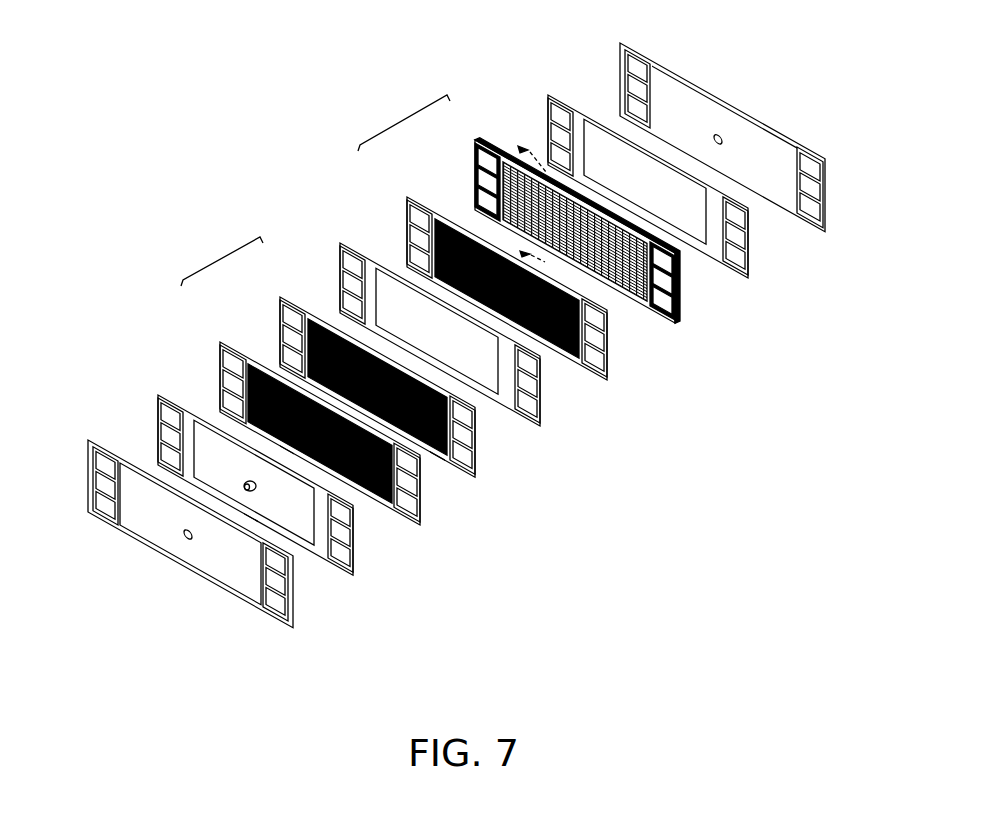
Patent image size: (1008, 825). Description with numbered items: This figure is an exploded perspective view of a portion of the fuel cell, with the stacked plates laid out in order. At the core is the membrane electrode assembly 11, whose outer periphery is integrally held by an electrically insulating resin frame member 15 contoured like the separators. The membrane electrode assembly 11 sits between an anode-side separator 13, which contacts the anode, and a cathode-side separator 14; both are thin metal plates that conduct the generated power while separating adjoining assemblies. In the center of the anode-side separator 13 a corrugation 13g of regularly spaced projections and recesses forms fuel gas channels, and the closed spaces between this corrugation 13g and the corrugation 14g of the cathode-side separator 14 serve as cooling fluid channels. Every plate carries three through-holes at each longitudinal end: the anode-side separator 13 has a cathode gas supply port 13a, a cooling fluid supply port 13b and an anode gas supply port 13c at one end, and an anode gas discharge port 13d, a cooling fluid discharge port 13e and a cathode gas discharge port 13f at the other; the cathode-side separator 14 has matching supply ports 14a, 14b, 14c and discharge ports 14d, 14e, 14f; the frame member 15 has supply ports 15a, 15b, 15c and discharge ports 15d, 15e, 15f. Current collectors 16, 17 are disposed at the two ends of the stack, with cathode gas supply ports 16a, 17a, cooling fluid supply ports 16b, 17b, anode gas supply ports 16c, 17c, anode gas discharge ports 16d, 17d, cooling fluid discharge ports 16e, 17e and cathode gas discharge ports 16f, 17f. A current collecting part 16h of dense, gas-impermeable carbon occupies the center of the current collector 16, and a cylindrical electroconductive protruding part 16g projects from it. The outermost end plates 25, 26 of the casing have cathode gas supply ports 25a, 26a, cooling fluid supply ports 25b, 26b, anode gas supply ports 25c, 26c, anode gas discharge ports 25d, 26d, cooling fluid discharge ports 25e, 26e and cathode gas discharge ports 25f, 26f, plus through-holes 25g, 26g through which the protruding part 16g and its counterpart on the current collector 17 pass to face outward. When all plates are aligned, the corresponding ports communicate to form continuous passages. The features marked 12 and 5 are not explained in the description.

The gas flow direction 5 is at (525, 197).
The membrane electrode assembly 11 is at (389, 276).
The cell unit 12 is at (401, 121).
The anode-side separator 13 is at (390, 393).
The cathode gas supply port 13a is at (222, 360).
The cooling fluid supply port 13b is at (222, 380).
The anode gas supply port 13c is at (222, 400).
The anode gas discharge port 13d is at (421, 465).
The cooling fluid discharge port 13e is at (421, 485).
The cathode gas discharge port 13f is at (421, 505).
The corrugation 13g is at (287, 449).
The cathode-side separator 14 is at (455, 345).
The cathode gas supply port 14a is at (282, 315).
The cooling fluid supply port 14b is at (282, 335).
The anode gas supply port 14c is at (282, 355).
The anode gas discharge port 14d is at (476, 418).
The cooling fluid discharge port 14e is at (476, 438).
The cathode gas discharge port 14f is at (476, 458).
The corrugation 14g is at (438, 457).
The frame member 15 is at (443, 336).
The cathode gas supply port 15a is at (342, 262).
The cooling fluid supply port 15b is at (342, 282).
The anode gas supply port 15c is at (342, 302).
The anode gas discharge port 15d is at (541, 366).
The cooling fluid discharge port 15e is at (541, 386).
The cathode gas discharge port 15f is at (541, 406).
The current collector 16 is at (254, 486).
The cathode gas supply port 16a is at (160, 412).
The cooling fluid supply port 16b is at (160, 432).
The anode gas supply port 16c is at (160, 452).
The anode gas discharge port 16d is at (354, 515).
The cooling fluid discharge port 16e is at (354, 535).
The cathode gas discharge port 16f is at (354, 555).
The protruding part 16g is at (247, 490).
The current collecting part 16h is at (252, 516).
The current collector 17 is at (648, 164).
The cathode gas supply port 17a is at (550, 108).
The cooling fluid supply port 17b is at (550, 128).
The anode gas supply port 17c is at (550, 148).
The anode gas discharge port 17d is at (746, 215).
The cooling fluid discharge port 17e is at (746, 235).
The cathode gas discharge port 17f is at (746, 255).
The end plate 25 is at (188, 526).
The cathode gas supply port 25a is at (93, 462).
The cooling fluid supply port 25b is at (93, 482).
The anode gas supply port 25c is at (93, 502).
The anode gas discharge port 25d is at (290, 566).
The cooling fluid discharge port 25e is at (290, 586).
The cathode gas discharge port 25f is at (290, 606).
The through-hole 25g is at (185, 537).
The end plate 26 is at (724, 129).
The cathode gas supply port 26a is at (623, 60).
The cooling fluid supply port 26b is at (623, 80).
The anode gas supply port 26c is at (623, 100).
The anode gas discharge port 26d is at (824, 170).
The cooling fluid discharge port 26e is at (824, 190).
The cathode gas discharge port 26f is at (824, 210).
The through-hole 26g is at (724, 139).